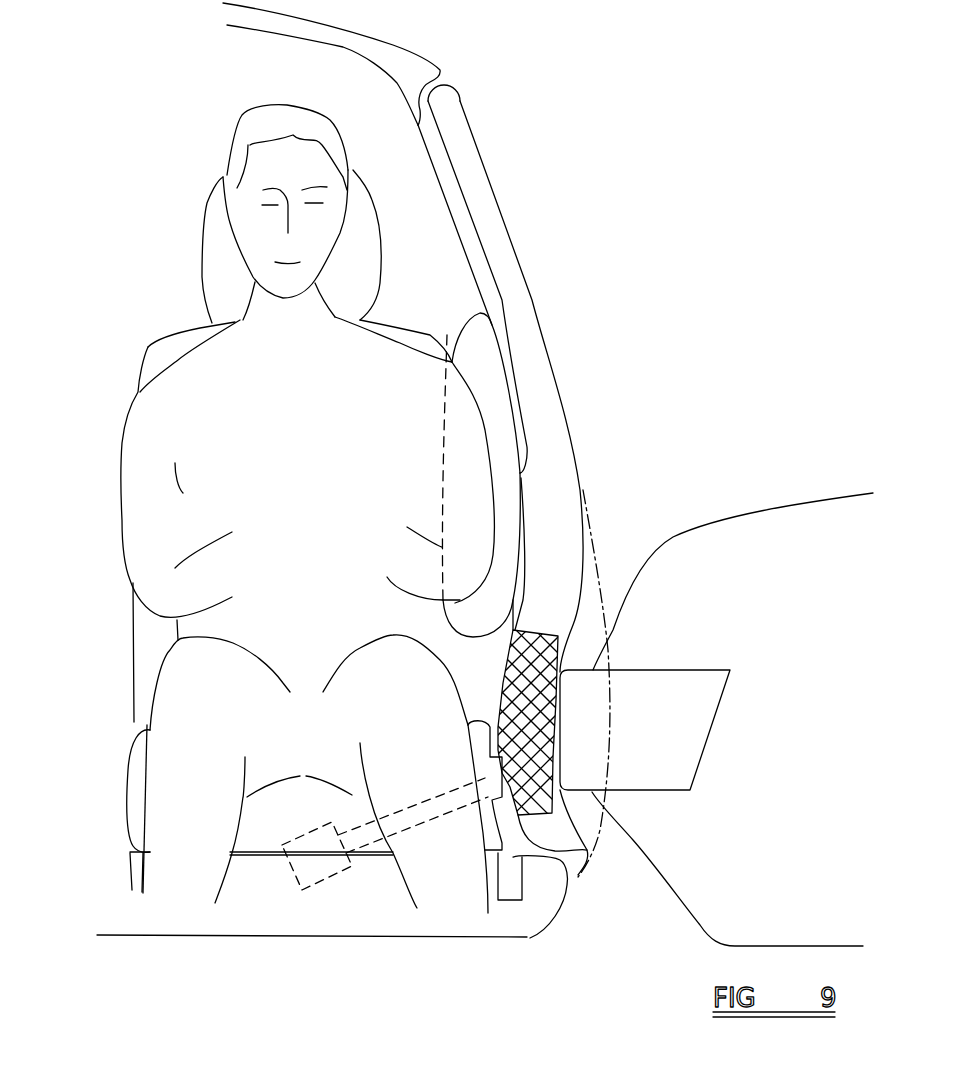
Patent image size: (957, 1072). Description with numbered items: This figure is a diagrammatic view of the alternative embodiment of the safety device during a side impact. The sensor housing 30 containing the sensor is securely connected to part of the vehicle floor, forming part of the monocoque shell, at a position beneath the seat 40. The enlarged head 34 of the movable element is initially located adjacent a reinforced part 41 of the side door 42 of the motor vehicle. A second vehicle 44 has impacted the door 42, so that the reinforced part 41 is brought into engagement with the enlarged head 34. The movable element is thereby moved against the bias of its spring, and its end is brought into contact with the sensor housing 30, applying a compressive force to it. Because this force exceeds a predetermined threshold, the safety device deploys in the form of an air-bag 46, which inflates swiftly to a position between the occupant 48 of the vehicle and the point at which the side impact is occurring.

The sensor housing 30 is at (324, 873).
The enlarged head 34 is at (510, 857).
The seat 40 is at (127, 797).
The reinforced part 41 is at (537, 633).
The side door 42 is at (577, 494).
The second vehicle 44 is at (818, 475).
The air-bag 46 is at (503, 397).
The occupant 48 is at (387, 360).